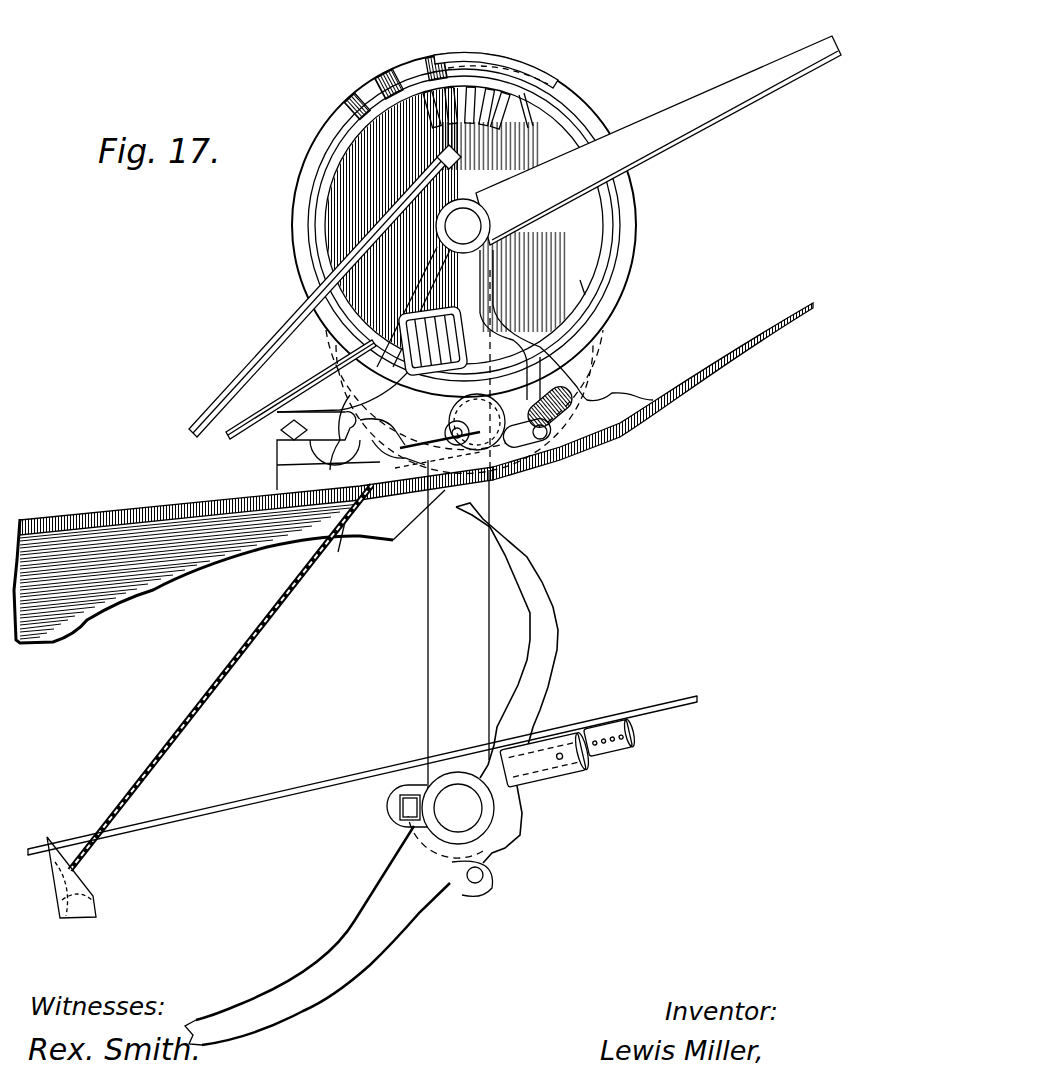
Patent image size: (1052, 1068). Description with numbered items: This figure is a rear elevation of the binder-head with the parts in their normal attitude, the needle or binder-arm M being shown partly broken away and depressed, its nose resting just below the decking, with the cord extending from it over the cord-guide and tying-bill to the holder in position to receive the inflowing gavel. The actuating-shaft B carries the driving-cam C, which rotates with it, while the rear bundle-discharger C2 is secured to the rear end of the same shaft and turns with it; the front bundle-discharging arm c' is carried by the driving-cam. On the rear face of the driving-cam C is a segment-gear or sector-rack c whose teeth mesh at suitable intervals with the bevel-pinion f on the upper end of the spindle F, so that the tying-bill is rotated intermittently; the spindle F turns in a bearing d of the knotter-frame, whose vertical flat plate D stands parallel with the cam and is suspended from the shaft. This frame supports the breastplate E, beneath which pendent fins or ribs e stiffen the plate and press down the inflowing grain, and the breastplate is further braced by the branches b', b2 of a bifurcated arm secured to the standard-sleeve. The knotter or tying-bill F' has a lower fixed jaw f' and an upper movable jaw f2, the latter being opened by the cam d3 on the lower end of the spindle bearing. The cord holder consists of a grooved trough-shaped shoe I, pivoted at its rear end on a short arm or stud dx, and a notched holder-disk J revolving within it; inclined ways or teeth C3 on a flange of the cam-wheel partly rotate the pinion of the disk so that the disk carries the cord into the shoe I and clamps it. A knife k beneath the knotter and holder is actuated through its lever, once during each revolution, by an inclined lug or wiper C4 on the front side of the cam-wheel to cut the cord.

The actuating-shaft B is at (463, 226).
The driving-cam C is at (464, 225).
The rear bundle-discharger C2 is at (702, 104).
The inclined ways or teeth C3 is at (420, 64).
The inclined lug, flange, or wiper C4 is at (541, 78).
The segment-gear or sector-rack c is at (439, 193).
The front bundle-discharging arm c' is at (573, 292).
The vertical flat plate D is at (464, 229).
The bearing d is at (489, 362).
The cam d3 is at (331, 527).
The arm or stud dx is at (565, 460).
The breastplate E is at (203, 573).
The fin or rib e is at (256, 501).
The spindle F is at (363, 368).
The knotter or tying-bill F' is at (367, 432).
The bevel-pinion f is at (443, 341).
The lower fixed jaw f' is at (426, 450).
The upper movable jaw f2 is at (418, 515).
The shoe I is at (539, 416).
The holder-disk J is at (477, 422).
The knife k is at (457, 423).
The branch of bifurcated brace b' is at (322, 291).
The branch of bifurcated brace b2 is at (242, 436).
The binder-arm or needle M is at (48, 879).